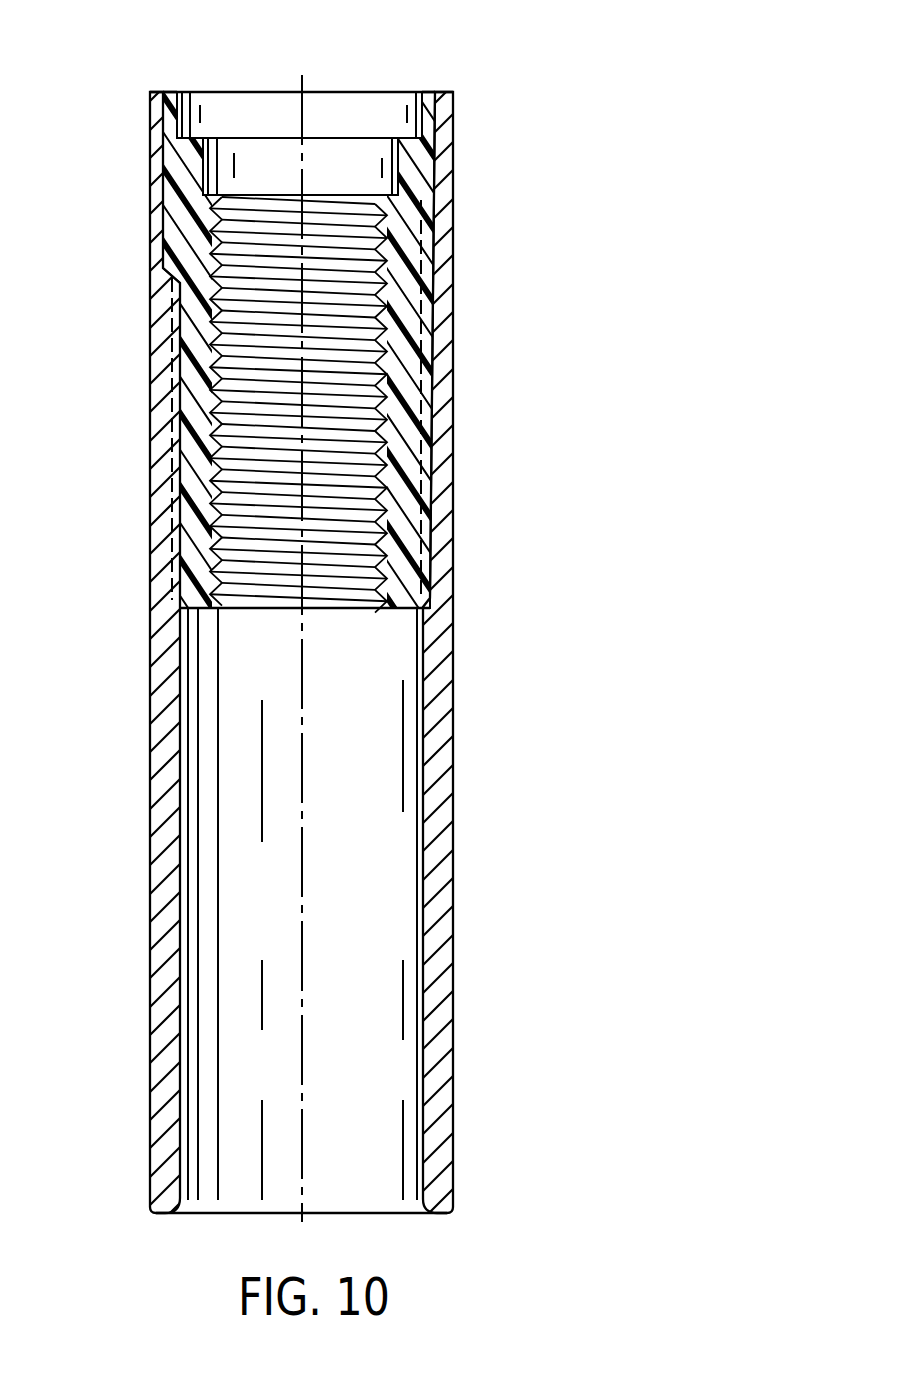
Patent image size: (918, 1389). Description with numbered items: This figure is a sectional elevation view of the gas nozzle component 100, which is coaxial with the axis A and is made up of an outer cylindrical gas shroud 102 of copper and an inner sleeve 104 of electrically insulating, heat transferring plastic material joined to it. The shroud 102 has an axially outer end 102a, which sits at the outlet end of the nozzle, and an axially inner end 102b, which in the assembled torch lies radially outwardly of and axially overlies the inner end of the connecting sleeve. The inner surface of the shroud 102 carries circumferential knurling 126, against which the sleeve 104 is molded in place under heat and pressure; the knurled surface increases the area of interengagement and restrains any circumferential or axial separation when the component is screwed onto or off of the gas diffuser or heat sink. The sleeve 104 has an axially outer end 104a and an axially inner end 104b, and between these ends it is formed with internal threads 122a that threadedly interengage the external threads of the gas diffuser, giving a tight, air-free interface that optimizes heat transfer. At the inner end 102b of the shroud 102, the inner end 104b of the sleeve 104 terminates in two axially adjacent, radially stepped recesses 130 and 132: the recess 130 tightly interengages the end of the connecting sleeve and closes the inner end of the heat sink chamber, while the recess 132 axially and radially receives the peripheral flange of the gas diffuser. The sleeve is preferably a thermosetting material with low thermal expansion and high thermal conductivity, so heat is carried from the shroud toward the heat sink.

The gas nozzle component 100 is at (457, 520).
The outer cylindrical gas shroud 102 is at (443, 850).
The axially outer end of shroud 102a is at (438, 1185).
The axially inner end of shroud 102b is at (443, 104).
The inner sleeve 104 is at (188, 332).
The axially outer end of sleeve 104a is at (178, 648).
The axially inner end of sleeve 104b is at (172, 100).
The internal threads 122a is at (355, 302).
The knurling 126 is at (182, 428).
The recess 130 is at (192, 102).
The recess 132 is at (395, 167).
The axis A is at (303, 758).